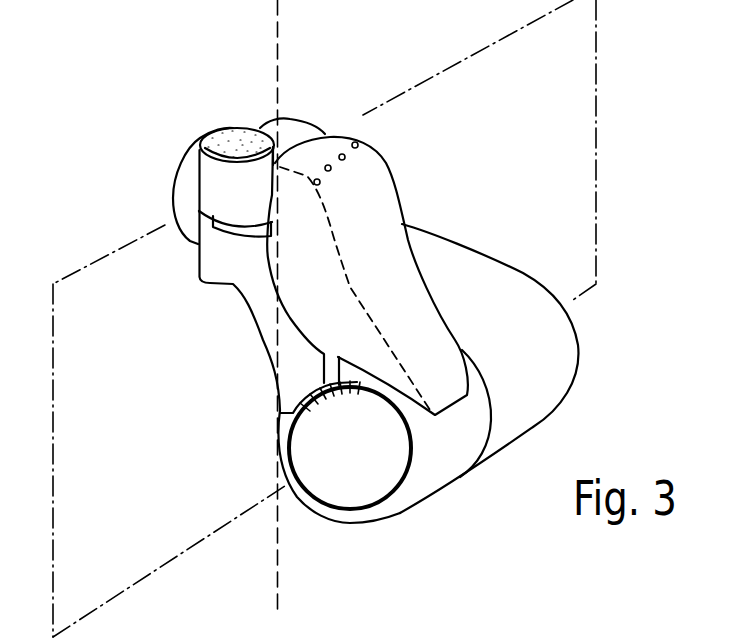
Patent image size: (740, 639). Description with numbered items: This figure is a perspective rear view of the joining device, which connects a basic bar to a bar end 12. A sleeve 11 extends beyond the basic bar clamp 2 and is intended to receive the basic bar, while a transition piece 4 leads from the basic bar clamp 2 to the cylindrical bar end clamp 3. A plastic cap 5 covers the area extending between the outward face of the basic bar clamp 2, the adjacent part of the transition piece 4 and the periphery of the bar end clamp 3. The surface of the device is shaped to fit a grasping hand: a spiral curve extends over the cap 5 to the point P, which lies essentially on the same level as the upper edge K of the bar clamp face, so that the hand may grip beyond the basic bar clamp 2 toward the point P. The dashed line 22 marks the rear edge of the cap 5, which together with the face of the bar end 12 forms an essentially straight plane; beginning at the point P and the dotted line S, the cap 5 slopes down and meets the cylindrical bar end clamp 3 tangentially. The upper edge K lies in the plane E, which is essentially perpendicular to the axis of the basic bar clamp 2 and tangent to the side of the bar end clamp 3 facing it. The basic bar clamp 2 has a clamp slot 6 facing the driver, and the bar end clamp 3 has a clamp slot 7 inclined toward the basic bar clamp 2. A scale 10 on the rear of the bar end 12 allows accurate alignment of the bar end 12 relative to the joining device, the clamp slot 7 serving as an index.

The basic bar clamp 2 is at (298, 130).
The bar end clamp 3 is at (443, 478).
The transition piece 4 is at (263, 340).
The plastic cap 5 is at (382, 184).
The clamp slot 6 is at (216, 221).
The clamp slot 7 is at (332, 366).
The scale 10 is at (278, 413).
The sleeve 11 is at (216, 131).
The bar end 12 is at (523, 279).
The dashed line 22 is at (349, 271).
The upper edge K is at (325, 131).
The dotted line S is at (355, 157).
The point P is at (318, 187).
The plane E is at (345, 318).